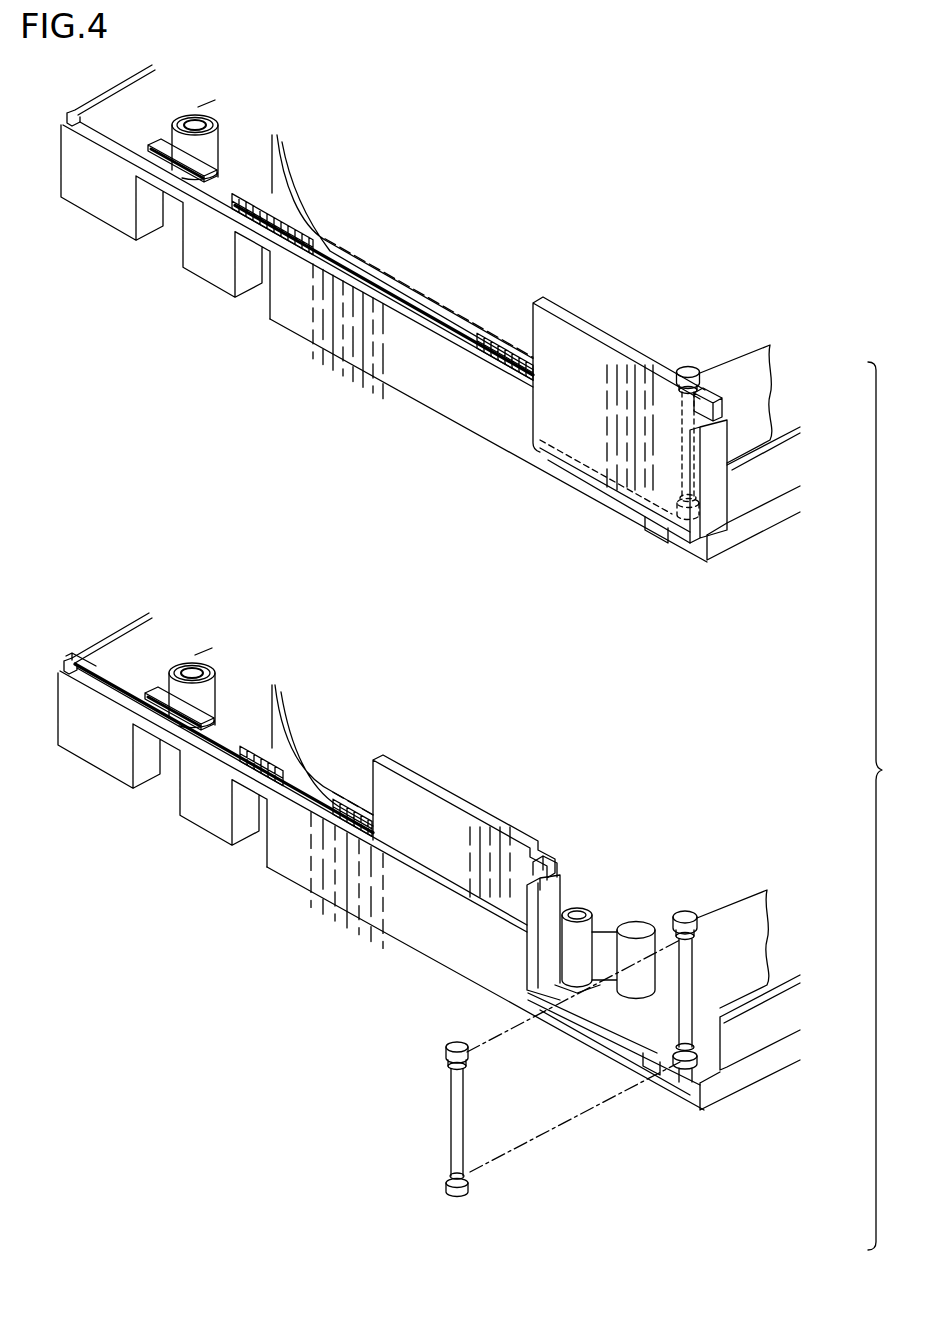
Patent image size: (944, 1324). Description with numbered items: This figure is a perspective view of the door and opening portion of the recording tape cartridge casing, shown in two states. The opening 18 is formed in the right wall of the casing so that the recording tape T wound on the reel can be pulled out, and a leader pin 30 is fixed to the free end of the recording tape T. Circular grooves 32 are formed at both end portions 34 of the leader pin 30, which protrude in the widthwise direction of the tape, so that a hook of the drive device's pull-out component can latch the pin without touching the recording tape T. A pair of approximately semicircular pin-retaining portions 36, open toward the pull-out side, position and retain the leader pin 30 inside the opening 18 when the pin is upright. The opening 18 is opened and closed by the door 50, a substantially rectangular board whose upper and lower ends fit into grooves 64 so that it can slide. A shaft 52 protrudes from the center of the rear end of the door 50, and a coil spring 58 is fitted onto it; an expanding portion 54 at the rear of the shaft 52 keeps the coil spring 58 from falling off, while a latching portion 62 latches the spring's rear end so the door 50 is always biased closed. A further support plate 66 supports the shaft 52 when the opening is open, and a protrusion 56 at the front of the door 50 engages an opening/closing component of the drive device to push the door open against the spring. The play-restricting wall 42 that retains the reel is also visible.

The opening 18 is at (618, 497).
The leader pin 30 is at (688, 364).
The circular groove 32 is at (693, 945).
The end portion 34 is at (693, 366).
The pin-retaining portion 36 is at (657, 1068).
The play-restricting wall 42 is at (288, 200).
The door 50 is at (597, 440).
The shaft 52 is at (390, 288).
The expanding portion 54 is at (233, 192).
The protrusion 56 is at (700, 472).
The coil spring 58 is at (488, 330).
The latching portion 62 is at (257, 712).
The groove 64 is at (648, 1050).
The support plate 66 is at (157, 160).
The recording tape T is at (747, 372).